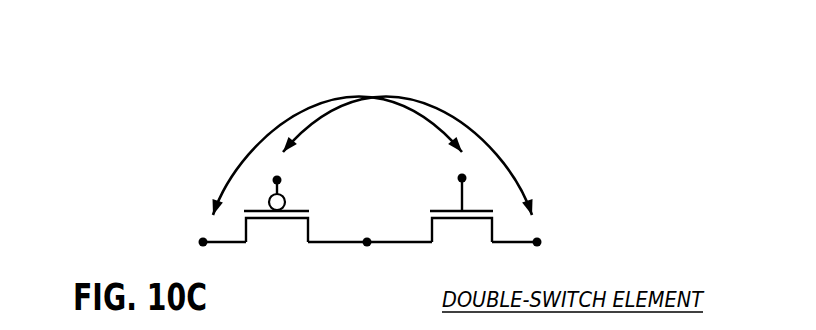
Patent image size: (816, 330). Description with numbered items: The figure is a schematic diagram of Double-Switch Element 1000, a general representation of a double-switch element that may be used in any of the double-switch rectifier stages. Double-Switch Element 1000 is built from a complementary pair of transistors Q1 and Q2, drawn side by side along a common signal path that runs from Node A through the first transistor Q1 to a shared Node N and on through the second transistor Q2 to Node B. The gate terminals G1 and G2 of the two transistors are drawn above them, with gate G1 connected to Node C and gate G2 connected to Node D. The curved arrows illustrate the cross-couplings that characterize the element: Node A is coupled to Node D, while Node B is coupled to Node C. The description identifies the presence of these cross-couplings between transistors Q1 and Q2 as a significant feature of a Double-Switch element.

The Double-Switch Element 1000 is at (128, 56).
The transistor Q1 is at (276, 227).
The transistor Q2 is at (461, 227).
The gate of first transistor G1 is at (290, 193).
The gate of second transistor G2 is at (474, 193).